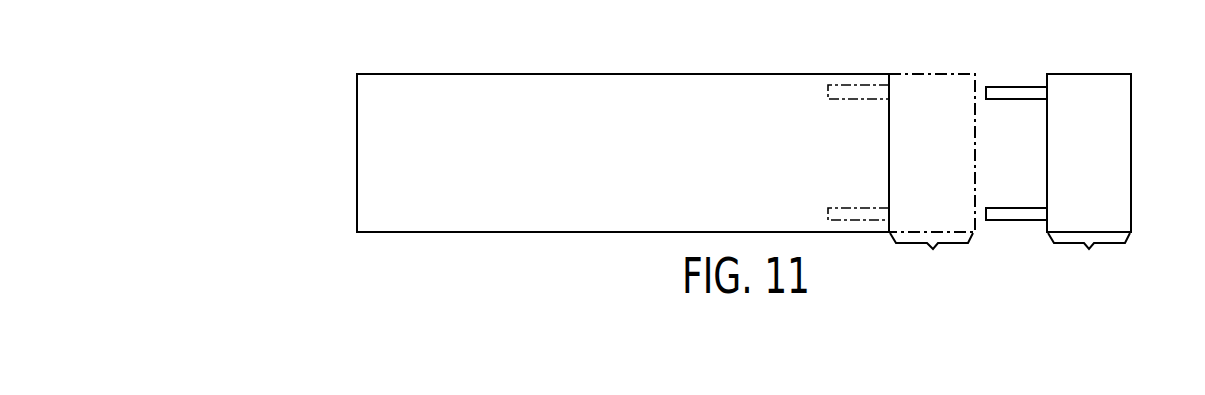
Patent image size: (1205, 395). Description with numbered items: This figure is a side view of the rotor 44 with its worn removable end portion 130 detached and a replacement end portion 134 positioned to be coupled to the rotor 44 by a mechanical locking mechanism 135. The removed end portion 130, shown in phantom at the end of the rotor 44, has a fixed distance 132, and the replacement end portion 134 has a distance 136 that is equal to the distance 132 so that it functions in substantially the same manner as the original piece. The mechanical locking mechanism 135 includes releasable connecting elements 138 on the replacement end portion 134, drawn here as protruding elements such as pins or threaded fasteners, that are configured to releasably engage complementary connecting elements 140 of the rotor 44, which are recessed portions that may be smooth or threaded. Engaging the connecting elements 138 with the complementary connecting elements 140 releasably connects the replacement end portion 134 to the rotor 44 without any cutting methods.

The rotor 44 is at (602, 80).
The removable end portion 130 is at (958, 82).
The fixed distance 132 is at (930, 283).
The replacement end portion 134 is at (1090, 82).
The mechanical locking mechanism 135 is at (1013, 270).
The distance 136 is at (1090, 283).
The releasable connecting elements 138 is at (1027, 86).
The complementary connecting elements 140 is at (862, 86).